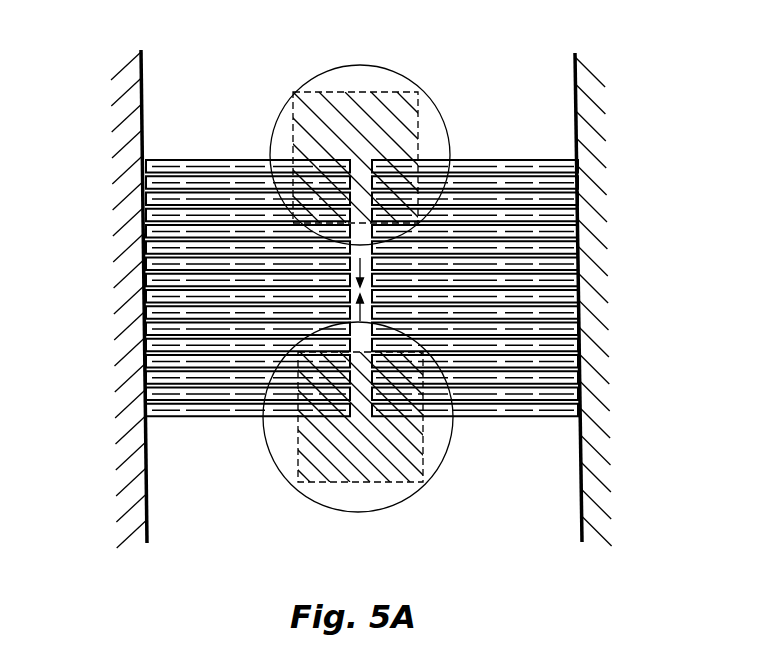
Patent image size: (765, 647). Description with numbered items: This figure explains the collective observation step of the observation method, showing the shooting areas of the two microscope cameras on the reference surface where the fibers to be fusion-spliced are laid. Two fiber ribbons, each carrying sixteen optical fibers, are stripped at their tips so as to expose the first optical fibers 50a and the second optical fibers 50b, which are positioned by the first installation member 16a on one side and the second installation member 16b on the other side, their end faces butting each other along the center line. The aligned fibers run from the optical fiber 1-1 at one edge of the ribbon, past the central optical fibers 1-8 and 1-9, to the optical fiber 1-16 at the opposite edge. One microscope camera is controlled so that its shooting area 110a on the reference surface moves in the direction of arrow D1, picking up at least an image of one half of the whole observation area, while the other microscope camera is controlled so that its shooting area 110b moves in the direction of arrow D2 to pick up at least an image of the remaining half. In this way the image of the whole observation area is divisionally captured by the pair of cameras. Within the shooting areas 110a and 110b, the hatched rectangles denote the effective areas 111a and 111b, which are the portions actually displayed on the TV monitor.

The first installation member 16a is at (114, 165).
The second installation member 16b is at (603, 241).
The optical fiber at one side of the fiber ribbon 1-1 is at (194, 168).
The eighth optical fiber of the fiber ribbon 1-8 is at (143, 278).
The ninth optical fiber of the fiber ribbon 1-9 is at (143, 296).
The optical fiber at the other side of the fiber ribbon 1-16 is at (146, 413).
The first optical fibers 50a is at (215, 418).
The second optical fibers 50b is at (504, 418).
The shooting area of the first microscope camera 110a is at (368, 65).
The shooting area of the second microscope camera 110b is at (340, 512).
The effective area of the first shooting area 111a is at (430, 101).
The effective area of the second shooting area 111b is at (432, 450).
The moving direction of the first shooting area D1 is at (372, 260).
The moving direction of the second shooting area D2 is at (372, 313).